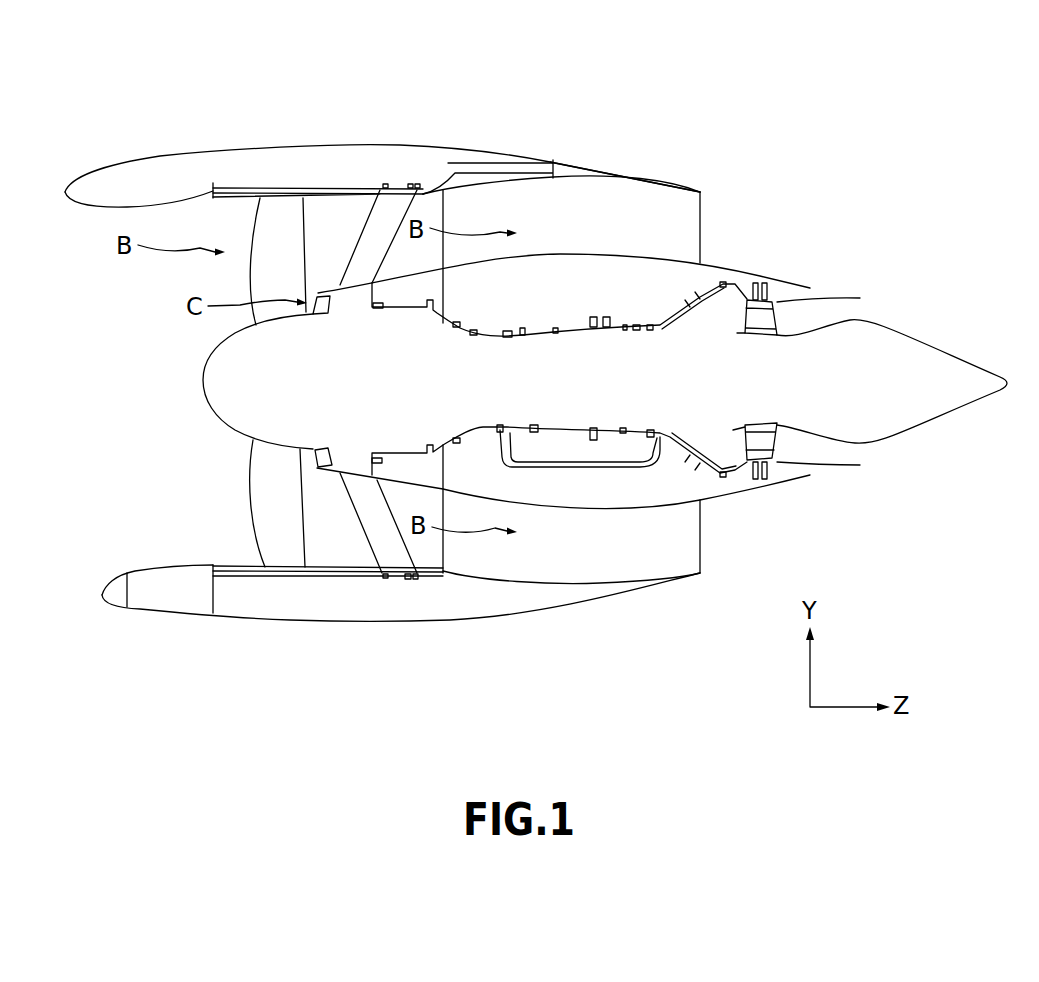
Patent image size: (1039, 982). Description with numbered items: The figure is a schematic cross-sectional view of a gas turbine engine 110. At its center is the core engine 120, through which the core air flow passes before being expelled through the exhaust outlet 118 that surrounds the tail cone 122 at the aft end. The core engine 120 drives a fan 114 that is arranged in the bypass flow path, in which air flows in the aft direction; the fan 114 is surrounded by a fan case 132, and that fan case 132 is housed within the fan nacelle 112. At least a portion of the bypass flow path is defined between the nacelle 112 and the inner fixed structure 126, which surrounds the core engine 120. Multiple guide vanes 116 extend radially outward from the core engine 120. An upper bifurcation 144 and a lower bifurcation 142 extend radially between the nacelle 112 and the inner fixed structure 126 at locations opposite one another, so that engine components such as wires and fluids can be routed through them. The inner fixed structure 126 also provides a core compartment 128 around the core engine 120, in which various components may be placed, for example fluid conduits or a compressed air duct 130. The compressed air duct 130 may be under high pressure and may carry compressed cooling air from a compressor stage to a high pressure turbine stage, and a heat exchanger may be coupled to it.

The gas turbine engine 110 is at (710, 101).
The nacelle 112 is at (247, 138).
The fan 114 is at (260, 493).
The guide vanes 116 is at (383, 537).
The exhaust outlet 118 is at (855, 311).
The core engine 120 is at (582, 316).
The tail cone 122 is at (900, 412).
The inner fixed structure 126 is at (580, 250).
The core compartment 128 is at (601, 503).
The compressed air duct 130 is at (662, 476).
The fan case 132 is at (244, 577).
The lower bifurcation 142 is at (670, 560).
The upper bifurcation 144 is at (692, 209).